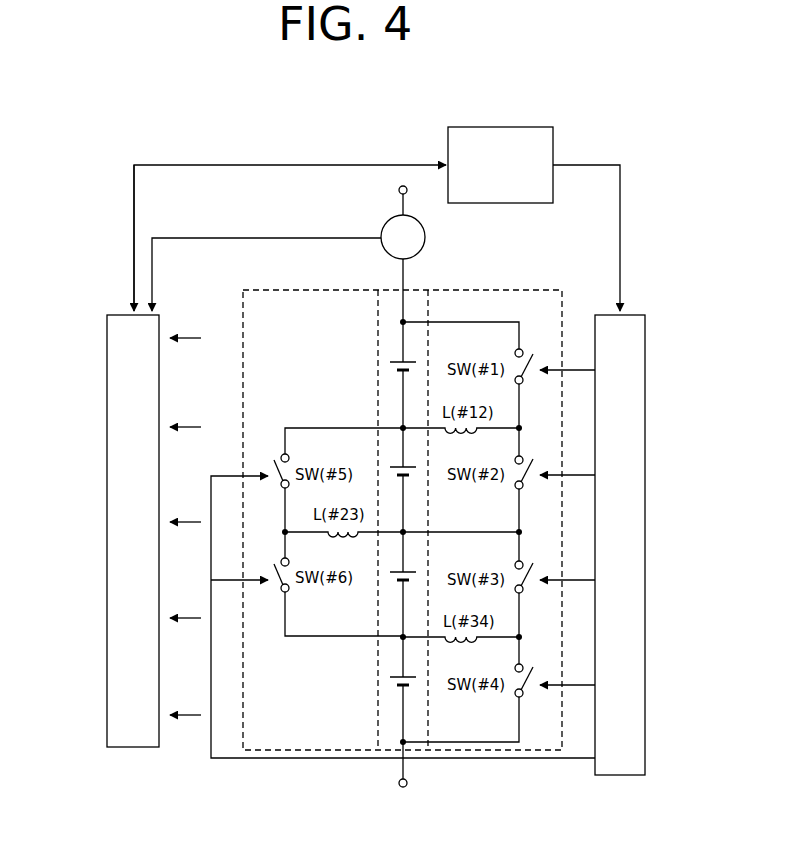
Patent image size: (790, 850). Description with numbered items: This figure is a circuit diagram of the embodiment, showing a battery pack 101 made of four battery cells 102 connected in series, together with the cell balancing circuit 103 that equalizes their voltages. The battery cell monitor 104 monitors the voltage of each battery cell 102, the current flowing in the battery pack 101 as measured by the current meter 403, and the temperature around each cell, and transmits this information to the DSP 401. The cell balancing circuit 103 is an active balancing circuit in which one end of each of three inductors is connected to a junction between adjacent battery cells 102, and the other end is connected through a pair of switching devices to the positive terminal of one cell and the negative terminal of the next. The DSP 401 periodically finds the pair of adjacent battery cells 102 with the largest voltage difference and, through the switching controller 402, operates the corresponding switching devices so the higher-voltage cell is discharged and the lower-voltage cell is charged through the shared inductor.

The DSP 401 is at (553, 135).
The current meter 403 is at (425, 240).
The battery cell monitor 104 is at (107, 455).
The switching controller 402 is at (645, 490).
The cell balancing circuit 103 is at (313, 752).
The battery pack 101 is at (418, 752).
The battery cell 102 is at (390, 365).